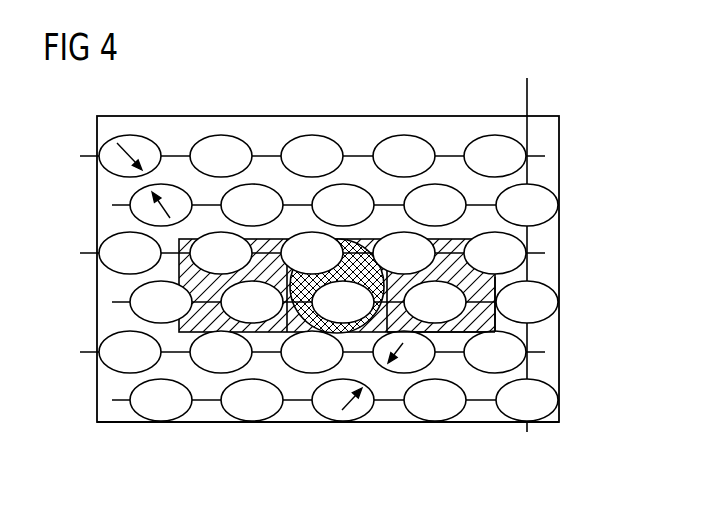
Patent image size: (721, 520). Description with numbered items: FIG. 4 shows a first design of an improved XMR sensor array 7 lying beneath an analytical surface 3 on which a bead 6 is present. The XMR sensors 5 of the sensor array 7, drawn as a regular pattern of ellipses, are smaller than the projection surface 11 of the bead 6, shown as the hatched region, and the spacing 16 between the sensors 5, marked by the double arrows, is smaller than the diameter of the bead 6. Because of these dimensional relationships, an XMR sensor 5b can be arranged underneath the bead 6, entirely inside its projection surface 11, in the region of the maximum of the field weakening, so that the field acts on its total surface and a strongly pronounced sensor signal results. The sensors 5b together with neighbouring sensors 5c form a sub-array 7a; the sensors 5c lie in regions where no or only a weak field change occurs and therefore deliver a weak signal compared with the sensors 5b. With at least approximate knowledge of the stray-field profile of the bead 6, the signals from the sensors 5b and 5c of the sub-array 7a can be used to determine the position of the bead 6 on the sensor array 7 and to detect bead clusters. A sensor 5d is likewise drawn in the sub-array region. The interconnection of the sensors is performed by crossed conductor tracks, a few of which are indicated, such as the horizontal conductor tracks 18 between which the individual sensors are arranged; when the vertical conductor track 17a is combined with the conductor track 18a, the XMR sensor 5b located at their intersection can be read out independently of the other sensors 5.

The analytical surface 3 is at (541, 137).
The XMR sensors 5 is at (307, 138).
The XMR sensor 5b is at (312, 247).
The XMR sensors 5c is at (242, 300).
The fiber strand region 5d is at (560, 289).
The bead 6 is at (376, 249).
The sensor array 7 is at (156, 428).
The sub-array 7a is at (512, 331).
The projection surface 11 is at (289, 337).
The spacing 16 is at (146, 182).
The conductor track 17a is at (527, 88).
The conductor tracks 18 is at (86, 249).
The conductor track 18a is at (560, 301).